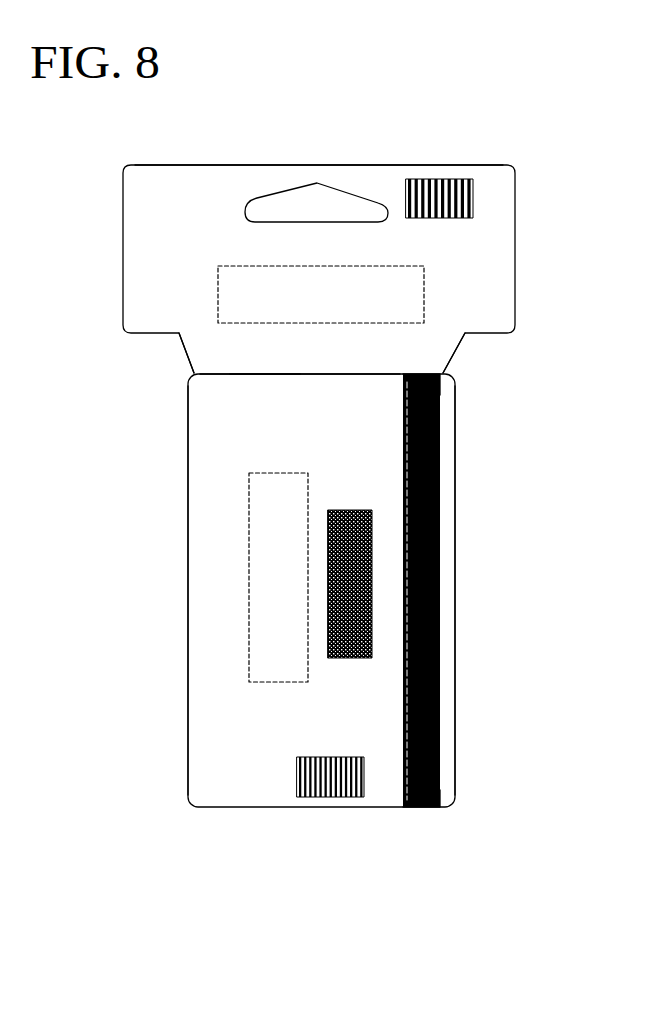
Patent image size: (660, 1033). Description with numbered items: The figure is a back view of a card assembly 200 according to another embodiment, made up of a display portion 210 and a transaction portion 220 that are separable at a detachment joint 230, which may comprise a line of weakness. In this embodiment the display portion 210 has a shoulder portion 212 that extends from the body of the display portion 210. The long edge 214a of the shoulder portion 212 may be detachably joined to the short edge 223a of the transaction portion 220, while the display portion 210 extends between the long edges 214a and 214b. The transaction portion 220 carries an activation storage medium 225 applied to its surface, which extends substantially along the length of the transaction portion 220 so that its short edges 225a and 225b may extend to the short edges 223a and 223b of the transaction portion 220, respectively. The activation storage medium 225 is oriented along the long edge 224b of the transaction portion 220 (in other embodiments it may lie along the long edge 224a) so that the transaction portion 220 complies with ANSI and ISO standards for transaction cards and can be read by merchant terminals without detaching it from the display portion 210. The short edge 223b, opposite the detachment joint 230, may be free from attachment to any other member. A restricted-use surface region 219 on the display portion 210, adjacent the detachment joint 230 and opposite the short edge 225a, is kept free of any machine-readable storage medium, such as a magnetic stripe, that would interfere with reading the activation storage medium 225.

The card assembly 200 is at (505, 94).
The display portion 210 is at (521, 218).
The shoulder portion 212 is at (142, 247).
The long edge of shoulder portion 214a is at (227, 375).
The long edge of display portion 214b is at (248, 165).
The restricted-use surface region 219 is at (447, 367).
The transaction portion 220 is at (470, 608).
The short edge of transaction portion 223a is at (268, 374).
The short edge of transaction portion 223b is at (307, 807).
The long edge of transaction portion 224a is at (188, 671).
The long edge of transaction portion 224b is at (456, 654).
The activation storage medium 225 is at (439, 486).
The short edge of activation storage medium 225a is at (441, 377).
The short edge of activation storage medium 225b is at (436, 806).
The detachment joint 230 is at (245, 374).